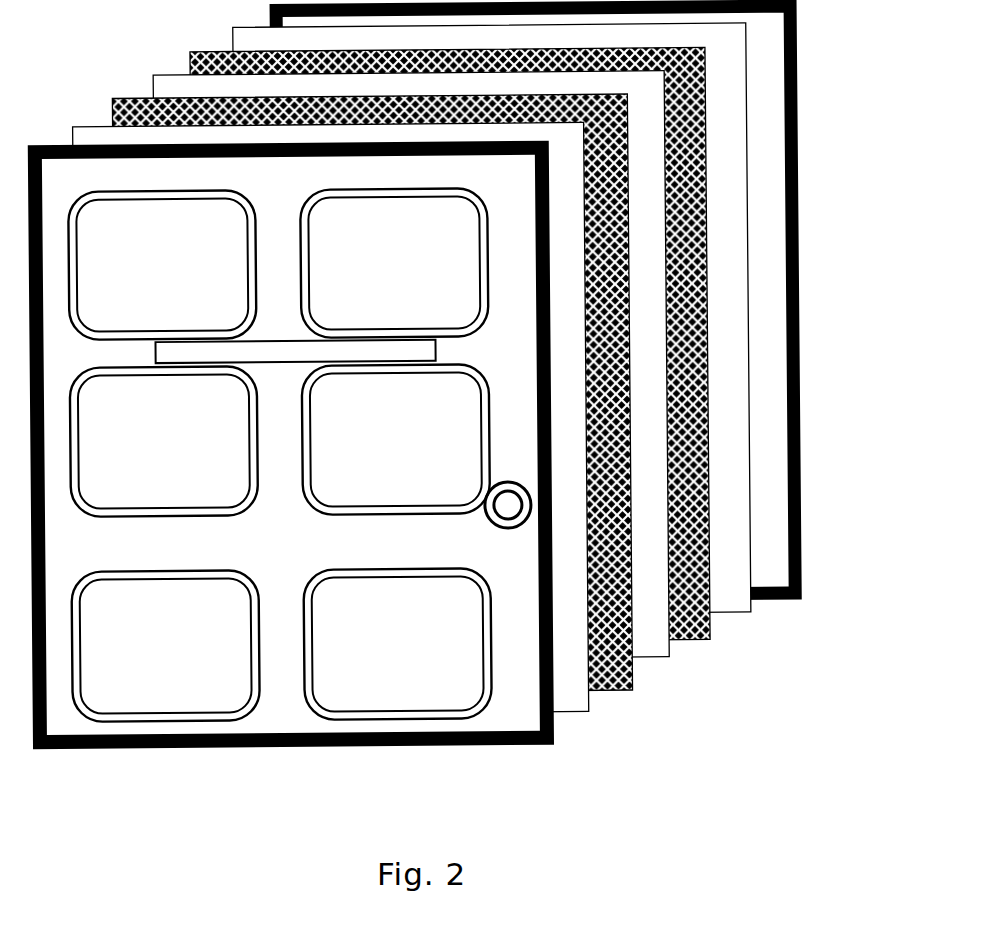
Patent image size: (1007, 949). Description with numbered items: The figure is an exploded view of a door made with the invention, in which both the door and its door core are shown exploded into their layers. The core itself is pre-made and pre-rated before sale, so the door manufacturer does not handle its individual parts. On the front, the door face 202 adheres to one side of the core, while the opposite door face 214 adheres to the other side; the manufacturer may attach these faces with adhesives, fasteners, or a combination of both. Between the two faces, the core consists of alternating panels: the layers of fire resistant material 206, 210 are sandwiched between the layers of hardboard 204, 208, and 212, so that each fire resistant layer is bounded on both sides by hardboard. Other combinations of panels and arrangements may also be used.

The door face 202 is at (243, 748).
The layer of hardboard 204 is at (568, 712).
The layer of fire resistant material 206 is at (612, 690).
The layer of hardboard 208 is at (655, 657).
The layer of fire resistant material 210 is at (703, 640).
The layer of hardboard 212 is at (740, 612).
The opposite door face 214 is at (795, 598).